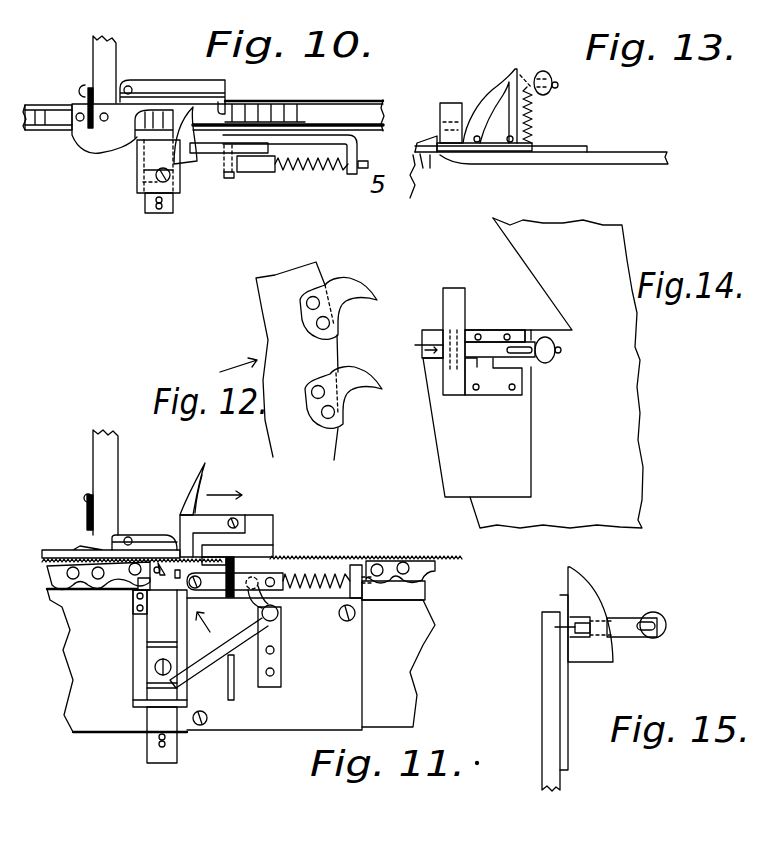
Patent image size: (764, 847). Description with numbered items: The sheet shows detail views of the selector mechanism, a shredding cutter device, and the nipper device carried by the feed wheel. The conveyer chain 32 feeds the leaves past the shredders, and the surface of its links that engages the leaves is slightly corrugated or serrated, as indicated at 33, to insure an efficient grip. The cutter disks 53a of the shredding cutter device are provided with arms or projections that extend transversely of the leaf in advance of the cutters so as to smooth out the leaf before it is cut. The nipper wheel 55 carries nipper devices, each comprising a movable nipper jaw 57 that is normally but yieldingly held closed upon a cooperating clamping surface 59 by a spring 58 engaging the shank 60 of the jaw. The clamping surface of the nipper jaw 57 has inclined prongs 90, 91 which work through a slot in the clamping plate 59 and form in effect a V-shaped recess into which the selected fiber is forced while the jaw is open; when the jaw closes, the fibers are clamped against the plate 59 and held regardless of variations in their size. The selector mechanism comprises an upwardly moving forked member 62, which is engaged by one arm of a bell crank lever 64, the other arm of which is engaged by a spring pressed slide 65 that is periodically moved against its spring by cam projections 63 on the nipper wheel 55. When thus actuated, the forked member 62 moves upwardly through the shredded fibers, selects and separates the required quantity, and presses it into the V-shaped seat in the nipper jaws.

In FIG. 11, the conveyer chain 32 is at (387, 560).
In FIG. 11, the serrated surface 33 is at (310, 557).
In FIG. 12, the cutter disks 53a is at (267, 315).
In FIG. 13, the nipper wheel 55 is at (627, 157).
In FIG. 14, the nipper wheel 55 is at (633, 380).
In FIG. 13, the nipper jaw 57 is at (430, 137).
In FIG. 13, the spring 58 is at (528, 128).
In FIG. 13, the clamping surface 59 is at (413, 153).
In FIG. 14, the clamping surface 59 is at (422, 336).
In FIG. 13, the shank 60 is at (497, 83).
In FIG. 14, the shank 60 is at (488, 347).
In FIG. 15, the shank 60 is at (630, 620).
In FIG. 10, the forked member 62 is at (150, 151).
In FIG. 11, the forked member 62 is at (155, 628).
In FIG. 13, the cam projections 63 is at (445, 101).
In FIG. 14, the cam projections 63 is at (443, 293).
In FIG. 15, the cam projections 63 is at (582, 587).
In FIG. 11, the bell crank lever 64 is at (236, 626).
In FIG. 10, the spring pressed slide 65 is at (261, 166).
In FIG. 11, the spring pressed slide 65 is at (240, 578).
In FIG. 13, the inclined prong 90 is at (424, 187).
In FIG. 13, the inclined prong 91 is at (430, 164).